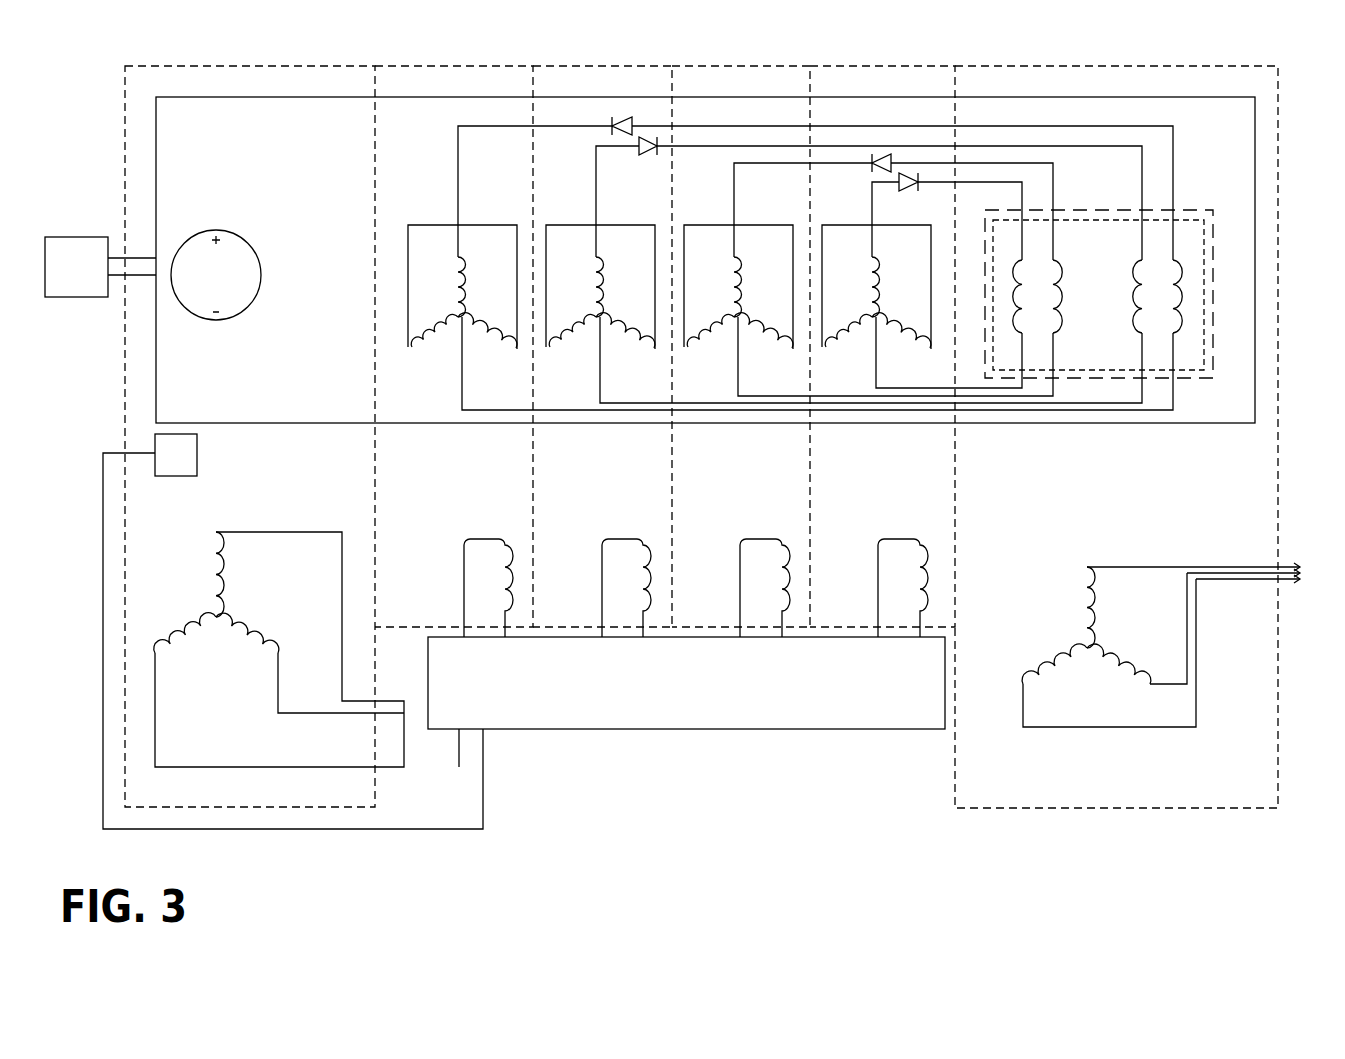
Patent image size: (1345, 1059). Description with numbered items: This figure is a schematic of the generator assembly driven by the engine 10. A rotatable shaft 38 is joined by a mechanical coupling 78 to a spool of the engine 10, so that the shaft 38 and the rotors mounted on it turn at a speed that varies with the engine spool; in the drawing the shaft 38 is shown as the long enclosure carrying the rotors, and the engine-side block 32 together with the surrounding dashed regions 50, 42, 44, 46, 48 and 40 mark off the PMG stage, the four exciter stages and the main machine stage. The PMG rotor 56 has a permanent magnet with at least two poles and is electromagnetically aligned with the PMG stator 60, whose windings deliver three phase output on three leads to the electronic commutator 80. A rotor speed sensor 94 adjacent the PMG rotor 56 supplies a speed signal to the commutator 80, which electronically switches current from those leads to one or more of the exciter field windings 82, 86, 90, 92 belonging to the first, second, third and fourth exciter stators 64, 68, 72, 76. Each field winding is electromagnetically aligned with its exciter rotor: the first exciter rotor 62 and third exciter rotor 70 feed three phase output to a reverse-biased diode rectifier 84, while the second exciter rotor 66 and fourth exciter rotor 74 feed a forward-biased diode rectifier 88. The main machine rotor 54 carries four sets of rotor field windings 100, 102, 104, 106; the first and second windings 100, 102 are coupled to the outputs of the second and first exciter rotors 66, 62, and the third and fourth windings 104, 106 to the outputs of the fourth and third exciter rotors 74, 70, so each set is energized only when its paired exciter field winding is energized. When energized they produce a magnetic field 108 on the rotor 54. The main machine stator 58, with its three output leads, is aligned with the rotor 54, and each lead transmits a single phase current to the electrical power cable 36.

The engine 10 is at (380, 30).
The prime mover / engine 32 is at (68, 280).
The electrical power cable 36 is at (1258, 562).
The rotatable shaft 38 is at (193, 97).
The output transformer section 40 is at (1130, 62).
The first stage section 42 is at (470, 62).
The second stage section 44 is at (626, 62).
The third stage section 46 is at (745, 62).
The fourth stage section 48 is at (890, 62).
The exciter / input section 50 is at (248, 62).
The main machine rotor 54 is at (1178, 210).
The PMG rotor 56 is at (195, 258).
The main machine stator 58 is at (1084, 648).
The PMG stator 60 is at (206, 612).
The first exciter rotor 62 is at (452, 312).
The first exciter stator 64 is at (464, 570).
The second exciter rotor 66 is at (590, 312).
The second exciter stator 68 is at (602, 570).
The third exciter rotor 70 is at (728, 312).
The third exciter stator 72 is at (740, 570).
The fourth exciter rotor 74 is at (866, 312).
The fourth exciter stator 76 is at (878, 570).
The mechanical coupling 78 is at (138, 280).
The electronic commutator 80 is at (903, 729).
The first exciter field winding 82 is at (512, 555).
The reverse-biased diode rectifier 84 is at (620, 117).
The second exciter field winding 86 is at (650, 555).
The forward-biased diode rectifier 88 is at (645, 137).
The third exciter field winding 90 is at (789, 555).
The fourth exciter field winding 92 is at (927, 555).
The rotor speed sensor 94 is at (168, 466).
The first main machine rotor field winding 100 is at (1145, 317).
The second main machine rotor field winding 102 is at (1182, 310).
The third main machine rotor field winding 104 is at (1013, 330).
The fourth main machine rotor field winding 106 is at (1053, 313).
The magnetic field 108 is at (1213, 228).